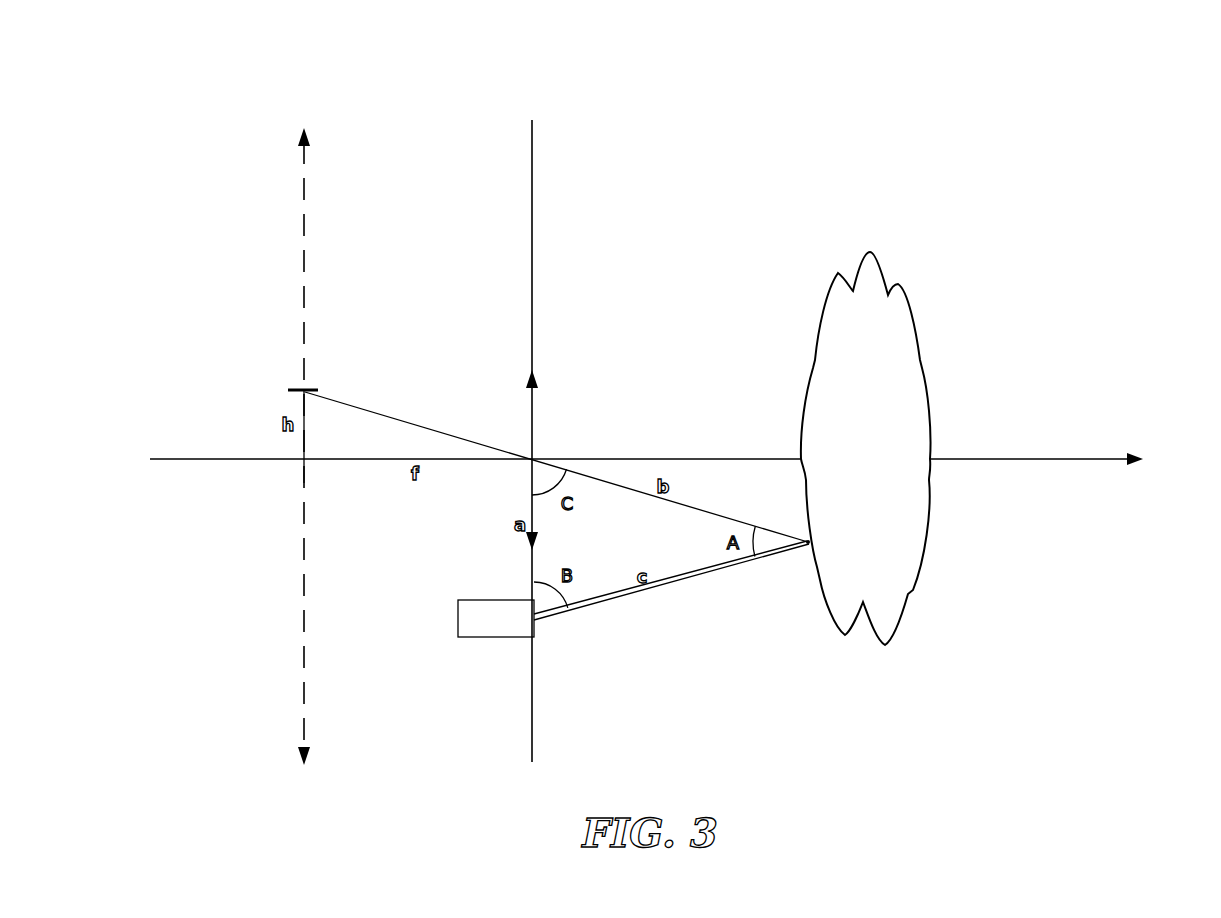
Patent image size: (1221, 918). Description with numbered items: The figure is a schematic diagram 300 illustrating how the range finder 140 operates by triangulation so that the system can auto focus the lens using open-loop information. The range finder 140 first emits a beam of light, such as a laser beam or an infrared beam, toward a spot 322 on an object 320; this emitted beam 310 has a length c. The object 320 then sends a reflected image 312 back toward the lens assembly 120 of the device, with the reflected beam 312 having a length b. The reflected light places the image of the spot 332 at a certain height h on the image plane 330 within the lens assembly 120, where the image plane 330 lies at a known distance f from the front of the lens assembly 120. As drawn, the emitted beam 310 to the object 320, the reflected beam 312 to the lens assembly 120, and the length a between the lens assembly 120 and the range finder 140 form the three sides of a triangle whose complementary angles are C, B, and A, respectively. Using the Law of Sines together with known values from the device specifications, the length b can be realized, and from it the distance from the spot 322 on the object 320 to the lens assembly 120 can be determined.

The schematic diagram 300 is at (1034, 153).
The image plane 330 is at (304, 407).
The image of the spot 332 is at (322, 383).
The lens assembly 120 is at (540, 373).
The range finder 140 is at (496, 600).
The emitted beam 310 is at (672, 581).
The reflected image 312 is at (690, 500).
The object 320 is at (866, 448).
The spot 322 is at (820, 538).